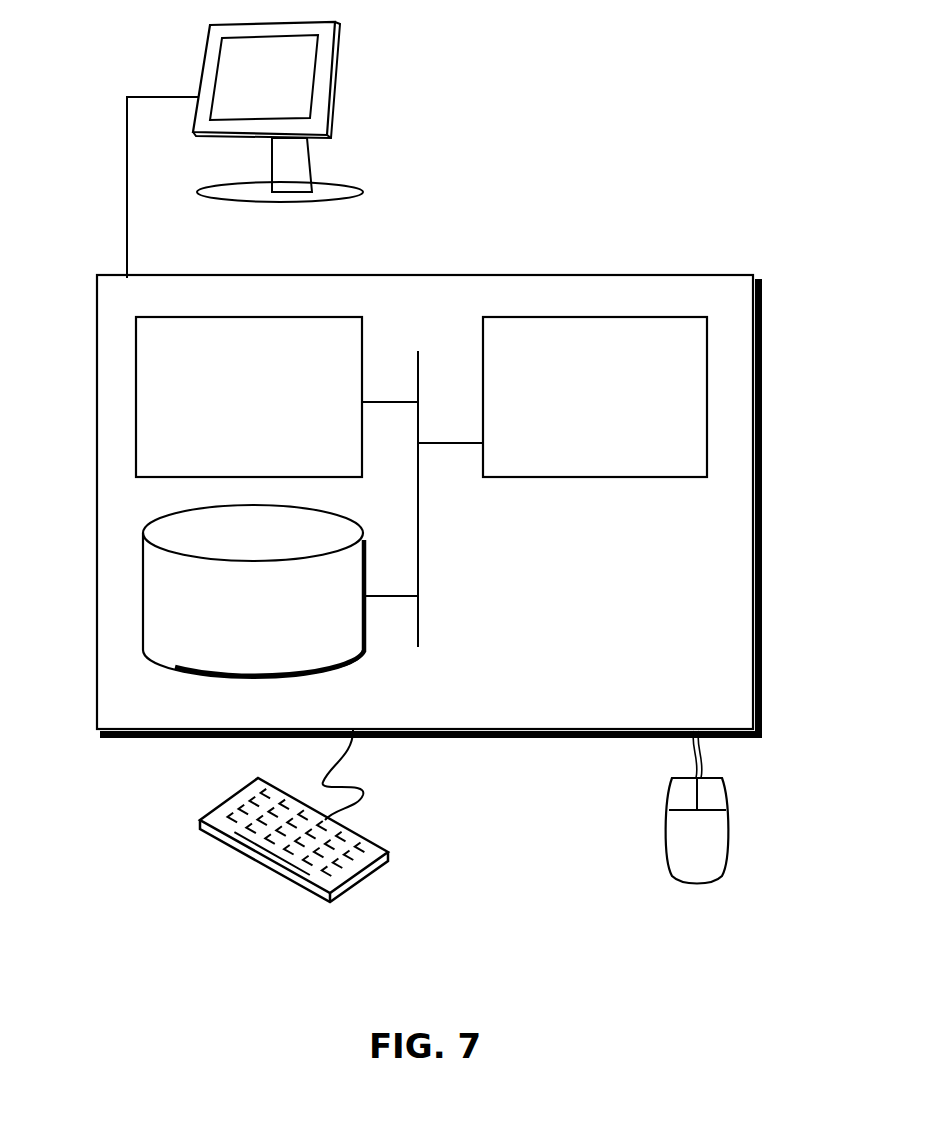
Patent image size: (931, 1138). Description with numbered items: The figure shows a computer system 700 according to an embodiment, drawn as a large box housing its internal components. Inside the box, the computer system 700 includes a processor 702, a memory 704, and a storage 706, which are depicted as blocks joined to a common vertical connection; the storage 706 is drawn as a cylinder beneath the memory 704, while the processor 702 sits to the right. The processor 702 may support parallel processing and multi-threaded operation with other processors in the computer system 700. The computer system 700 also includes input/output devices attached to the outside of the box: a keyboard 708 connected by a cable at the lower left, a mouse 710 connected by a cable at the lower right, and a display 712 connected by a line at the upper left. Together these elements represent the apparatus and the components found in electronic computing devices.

The computer system 700 is at (472, 255).
The processor 702 is at (577, 412).
The memory 704 is at (228, 411).
The storage 706 is at (234, 622).
The keyboard 708 is at (217, 842).
The mouse 710 is at (677, 851).
The display 712 is at (245, 150).